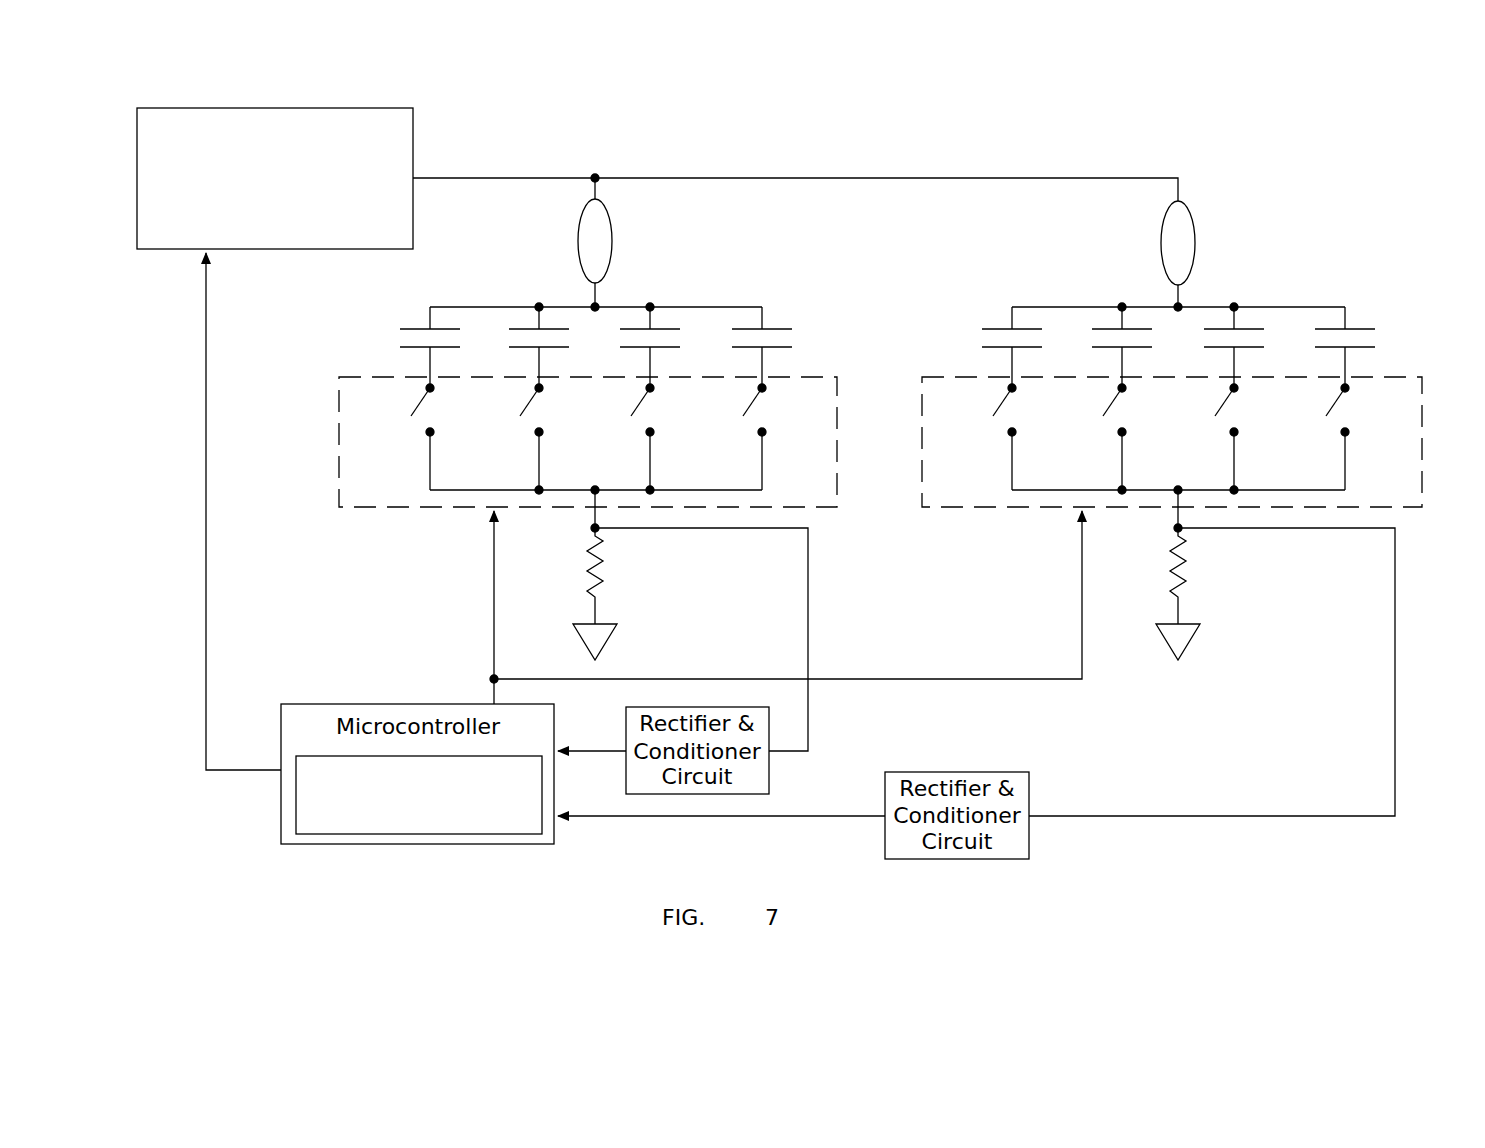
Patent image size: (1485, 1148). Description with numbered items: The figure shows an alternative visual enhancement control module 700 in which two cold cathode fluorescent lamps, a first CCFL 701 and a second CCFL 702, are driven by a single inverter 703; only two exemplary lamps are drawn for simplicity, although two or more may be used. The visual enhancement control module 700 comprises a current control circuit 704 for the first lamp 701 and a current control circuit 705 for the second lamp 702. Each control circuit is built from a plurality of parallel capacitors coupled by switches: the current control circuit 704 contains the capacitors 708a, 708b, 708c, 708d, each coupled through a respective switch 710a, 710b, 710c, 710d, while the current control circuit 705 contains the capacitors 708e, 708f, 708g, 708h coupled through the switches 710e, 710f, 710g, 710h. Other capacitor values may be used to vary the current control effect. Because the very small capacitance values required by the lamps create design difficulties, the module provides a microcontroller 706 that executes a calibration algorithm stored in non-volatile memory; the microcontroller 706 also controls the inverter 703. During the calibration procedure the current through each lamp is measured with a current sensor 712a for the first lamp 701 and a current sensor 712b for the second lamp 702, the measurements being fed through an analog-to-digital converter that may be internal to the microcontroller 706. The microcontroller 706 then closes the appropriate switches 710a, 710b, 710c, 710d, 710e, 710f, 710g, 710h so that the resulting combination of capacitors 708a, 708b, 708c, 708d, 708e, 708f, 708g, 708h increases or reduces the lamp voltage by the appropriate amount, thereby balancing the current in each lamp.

The visual enhancement control module 700 is at (1260, 148).
The CCFL 1 701 is at (612, 238).
The CCFL 2 702 is at (1195, 238).
The inverter 703 is at (413, 160).
The current control circuit 704 is at (773, 280).
The current control circuit 705 is at (1312, 256).
The microcontroller 706 is at (437, 834).
The capacitor 708a is at (427, 327).
The capacitor 708b is at (524, 327).
The capacitor 708c is at (663, 327).
The capacitor 708d is at (783, 327).
The capacitor 708e is at (1000, 327).
The capacitor 708f is at (1108, 327).
The capacitor 708g is at (1248, 327).
The capacitor 708h is at (1365, 327).
The switch 710a is at (408, 419).
The switch 710b is at (517, 419).
The switch 710c is at (628, 419).
The switch 710d is at (740, 419).
The switch 710e is at (990, 419).
The switch 710f is at (1100, 419).
The switch 710g is at (1212, 419).
The switch 710h is at (1323, 419).
The current sensor 712a is at (590, 550).
The current sensor 712b is at (1173, 550).